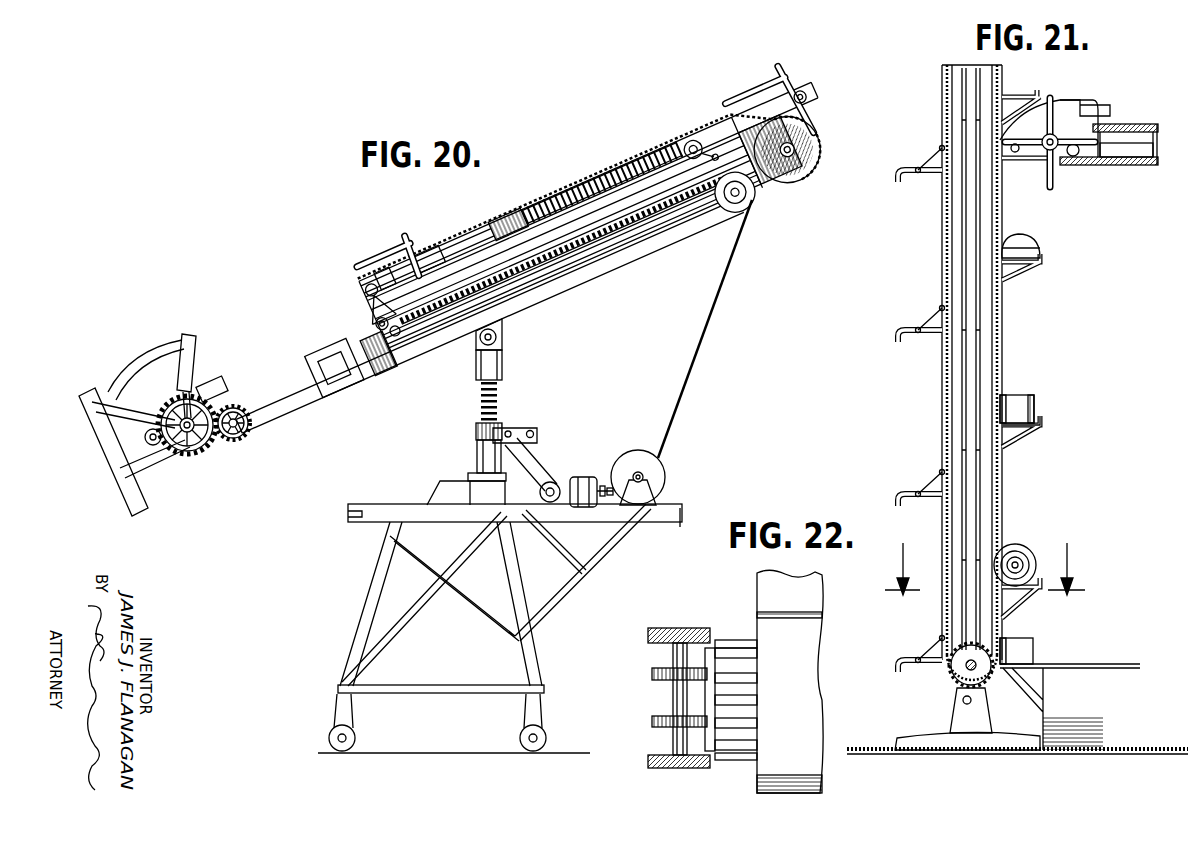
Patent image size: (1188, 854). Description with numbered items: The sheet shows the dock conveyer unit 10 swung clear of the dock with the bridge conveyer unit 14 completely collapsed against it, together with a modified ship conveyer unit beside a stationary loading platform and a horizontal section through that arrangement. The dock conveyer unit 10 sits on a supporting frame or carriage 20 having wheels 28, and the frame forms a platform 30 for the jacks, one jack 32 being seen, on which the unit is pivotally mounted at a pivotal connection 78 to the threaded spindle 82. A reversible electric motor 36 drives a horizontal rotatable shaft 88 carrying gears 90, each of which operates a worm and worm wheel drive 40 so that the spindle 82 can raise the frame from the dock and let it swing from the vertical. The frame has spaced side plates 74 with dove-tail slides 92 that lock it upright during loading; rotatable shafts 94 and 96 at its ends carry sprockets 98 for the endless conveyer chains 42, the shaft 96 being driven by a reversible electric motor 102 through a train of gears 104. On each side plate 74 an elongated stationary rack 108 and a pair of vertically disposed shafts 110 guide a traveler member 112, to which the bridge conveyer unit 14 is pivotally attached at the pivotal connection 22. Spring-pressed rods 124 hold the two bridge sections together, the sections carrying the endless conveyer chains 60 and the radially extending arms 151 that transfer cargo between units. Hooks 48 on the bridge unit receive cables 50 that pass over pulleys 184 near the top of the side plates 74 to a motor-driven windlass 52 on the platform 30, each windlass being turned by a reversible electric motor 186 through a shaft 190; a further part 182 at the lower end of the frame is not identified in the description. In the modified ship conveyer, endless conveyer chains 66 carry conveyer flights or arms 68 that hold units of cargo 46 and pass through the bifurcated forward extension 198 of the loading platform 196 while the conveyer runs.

In FIG. 20, the dock conveyer unit 10 is at (612, 271).
In FIG. 20, the bridge conveyer unit 14 is at (584, 172).
In FIG. 20, the supporting frame or carriage 20 is at (516, 582).
In FIG. 20, the pivotal connection 22 is at (362, 290).
In FIG. 21, the pivotal connection 22 is at (985, 579).
In FIG. 20, the wheels 28 is at (329, 738).
In FIG. 20, the platform 30 is at (579, 514).
In FIG. 20, the jack 32 is at (488, 452).
In FIG. 20, the reversible electric motor 36 is at (553, 486).
In FIG. 20, the worm and worm wheel drive 40 is at (496, 432).
In FIG. 20, the endless conveyer chains 42 is at (810, 143).
In FIG. 21, the units of cargo 46 is at (1032, 244).
In FIG. 20, the hooks 48 is at (690, 142).
In FIG. 20, the cables 50 is at (712, 317).
In FIG. 20, the motor-driven windlass 52 is at (634, 458).
In FIG. 21, the endless conveyer chains 60 is at (1109, 166).
In FIG. 21, the endless conveyer chains 66 is at (992, 380).
In FIG. 22, the endless conveyer chains 66 is at (664, 714).
In FIG. 21, the conveyer flights or arms 68 is at (1034, 426).
In FIG. 22, the conveyer flights or arms 68 is at (733, 745).
In FIG. 20, the side plates 74 is at (278, 404).
In FIG. 20, the pivotal connection 78 is at (479, 342).
In FIG. 20, the threaded spindle 82 is at (483, 382).
In FIG. 20, the rotatable shaft 88 is at (539, 433).
In FIG. 20, the gears 90 is at (530, 428).
In FIG. 20, the dove-tail slides 92 is at (340, 390).
In FIG. 20, the rotatable shaft 94 is at (797, 153).
In FIG. 20, the rotatable shaft 96 is at (160, 446).
In FIG. 20, the sprockets 98 is at (797, 166).
In FIG. 20, the reversible electric motor 102 is at (217, 385).
In FIG. 20, the train of gears 104 is at (230, 441).
In FIG. 20, the elongated stationary rack 108 is at (556, 286).
In FIG. 20, the vertically disposed shafts 110 is at (577, 287).
In FIG. 20, the traveler member 112 is at (400, 366).
In FIG. 20, the spring-pressed rods 124 is at (575, 190).
In FIG. 20, the radially extending arms 151 is at (390, 270).
In FIG. 21, the radially extending arms 151 is at (1048, 182).
In FIG. 20, the curved bracket 182 is at (130, 378).
In FIG. 20, the pulleys 184 is at (752, 196).
In FIG. 20, the reversible electric motor 186 is at (586, 482).
In FIG. 20, the shaft 190 is at (650, 482).
In FIG. 22, the loading platform 196 is at (818, 696).
In FIG. 21, the bifurcated forward extension 198 is at (1016, 671).
In FIG. 22, the bifurcated forward extension 198 is at (733, 638).